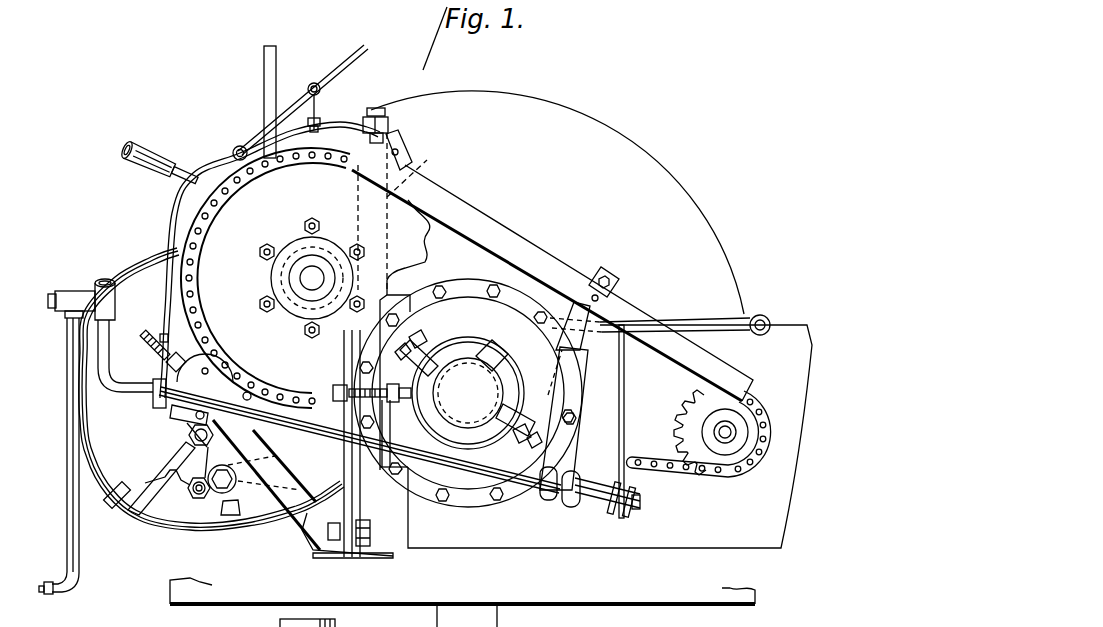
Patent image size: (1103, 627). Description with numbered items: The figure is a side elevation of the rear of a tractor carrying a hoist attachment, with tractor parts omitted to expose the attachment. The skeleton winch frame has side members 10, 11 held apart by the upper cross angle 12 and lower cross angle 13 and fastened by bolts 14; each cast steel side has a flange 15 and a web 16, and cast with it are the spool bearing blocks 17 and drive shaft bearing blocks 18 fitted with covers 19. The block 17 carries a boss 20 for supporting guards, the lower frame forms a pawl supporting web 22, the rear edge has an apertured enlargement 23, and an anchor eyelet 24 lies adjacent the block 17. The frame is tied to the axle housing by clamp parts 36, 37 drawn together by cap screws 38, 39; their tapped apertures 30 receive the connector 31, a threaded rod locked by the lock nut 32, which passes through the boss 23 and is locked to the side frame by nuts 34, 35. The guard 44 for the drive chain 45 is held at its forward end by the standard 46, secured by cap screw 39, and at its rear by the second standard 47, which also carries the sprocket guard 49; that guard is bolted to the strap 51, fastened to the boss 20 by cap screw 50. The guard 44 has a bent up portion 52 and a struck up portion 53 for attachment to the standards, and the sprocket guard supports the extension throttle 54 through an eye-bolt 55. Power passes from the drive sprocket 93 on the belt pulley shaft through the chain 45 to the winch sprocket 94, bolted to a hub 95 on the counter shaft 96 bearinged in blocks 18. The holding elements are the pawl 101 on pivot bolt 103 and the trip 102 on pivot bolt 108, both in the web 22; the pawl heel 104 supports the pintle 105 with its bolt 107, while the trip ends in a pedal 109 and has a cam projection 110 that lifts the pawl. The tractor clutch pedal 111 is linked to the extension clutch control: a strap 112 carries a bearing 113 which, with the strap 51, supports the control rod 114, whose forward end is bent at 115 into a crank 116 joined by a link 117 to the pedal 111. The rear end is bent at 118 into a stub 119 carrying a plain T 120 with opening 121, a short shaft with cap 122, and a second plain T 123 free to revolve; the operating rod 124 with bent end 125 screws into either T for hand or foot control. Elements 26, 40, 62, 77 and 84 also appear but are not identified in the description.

The side member 10 is at (283, 527).
The side member 11 is at (462, 602).
The upper cross angle 12 is at (408, 310).
The lower cross angle 13 is at (362, 548).
The bolts 14 is at (334, 542).
The flange 15 is at (255, 517).
The web 16 is at (302, 550).
The spool bearing block 17 is at (180, 420).
The drive shaft bearing block 18 is at (336, 624).
The cover 19 is at (214, 378).
The boss 20 is at (203, 342).
The pawl supporting web 22 is at (237, 485).
The enlargement 23 is at (341, 443).
The anchor eyelet 24 is at (250, 392).
The frame plate 26 is at (395, 528).
The apertures 30 is at (390, 430).
The connector 31 is at (382, 468).
The lock nut 32 is at (468, 393).
The nut 34 is at (332, 392).
The nut 35 is at (345, 386).
The clamp part 36 is at (474, 345).
The clamp part 37 is at (478, 437).
The cap screw 38 is at (440, 345).
The cap screw 39 is at (528, 437).
The frame member 40 is at (500, 616).
The chain guard 44 is at (497, 232).
The drive chain 45 is at (770, 428).
The standard 46 is at (593, 320).
The second standard 47 is at (407, 186).
The sprocket guard 49 is at (178, 211).
The cap screw 50 is at (152, 402).
The strap 51 is at (130, 440).
The bent up portion 52 is at (408, 150).
The struck up portion 53 is at (617, 286).
The extension throttle 54 is at (355, 72).
The eye-bolt 55 is at (320, 111).
The valve 62 is at (150, 342).
The post 77 is at (265, 95).
The handle 84 is at (182, 182).
The drive sprocket 93 is at (692, 410).
The winch sprocket 94 is at (235, 205).
The hub 95 is at (292, 252).
The counter shaft 96 is at (300, 278).
The pawl 101 is at (290, 458).
The trip 102 is at (165, 460).
The pivot bolt 103 is at (230, 424).
The heel 104 is at (200, 500).
The pintle 105 is at (264, 469).
The bolt 107 is at (171, 496).
The pivot bolt 108 is at (212, 420).
The pedal 109 is at (118, 508).
The cam projection 110 is at (185, 452).
The tractor clutch pedal 111 is at (705, 320).
The strap 112 is at (570, 435).
The bearing 113 is at (549, 500).
The control rod 114 is at (513, 478).
The bent forward end 115 is at (594, 474).
The crank 116 is at (612, 505).
The link 117 is at (625, 430).
The bent rear end 118 is at (152, 350).
The stub 119 is at (110, 330).
The plain T 120 is at (112, 282).
The opening 121 is at (96, 279).
The cap 122 is at (53, 290).
The second plain T 123 is at (74, 290).
The operating rod 124 is at (82, 564).
The bent end 125 is at (50, 598).